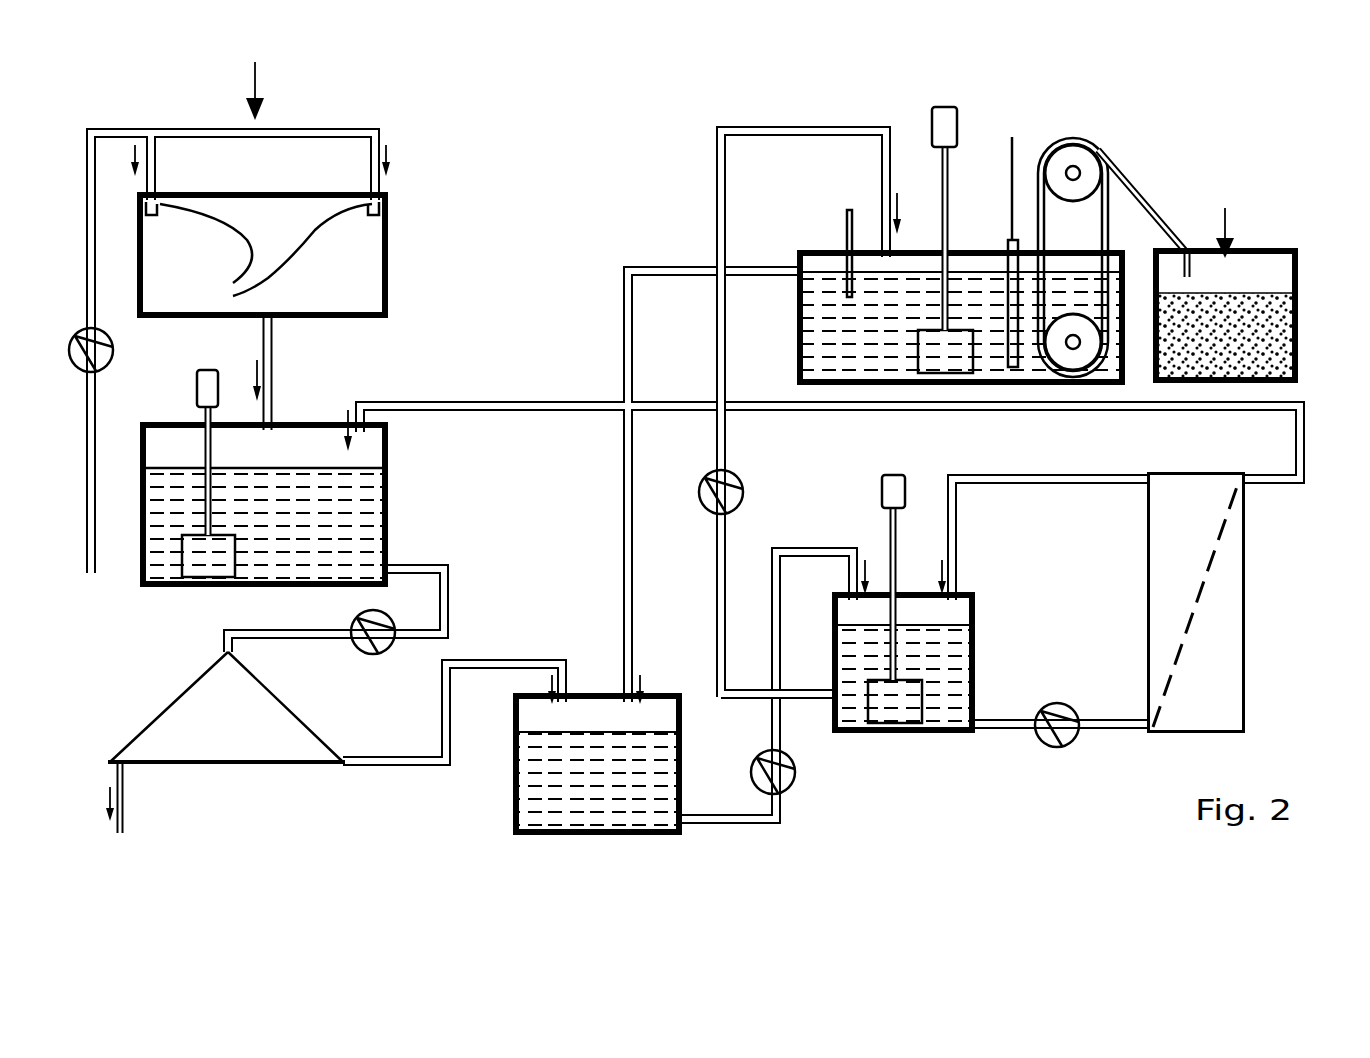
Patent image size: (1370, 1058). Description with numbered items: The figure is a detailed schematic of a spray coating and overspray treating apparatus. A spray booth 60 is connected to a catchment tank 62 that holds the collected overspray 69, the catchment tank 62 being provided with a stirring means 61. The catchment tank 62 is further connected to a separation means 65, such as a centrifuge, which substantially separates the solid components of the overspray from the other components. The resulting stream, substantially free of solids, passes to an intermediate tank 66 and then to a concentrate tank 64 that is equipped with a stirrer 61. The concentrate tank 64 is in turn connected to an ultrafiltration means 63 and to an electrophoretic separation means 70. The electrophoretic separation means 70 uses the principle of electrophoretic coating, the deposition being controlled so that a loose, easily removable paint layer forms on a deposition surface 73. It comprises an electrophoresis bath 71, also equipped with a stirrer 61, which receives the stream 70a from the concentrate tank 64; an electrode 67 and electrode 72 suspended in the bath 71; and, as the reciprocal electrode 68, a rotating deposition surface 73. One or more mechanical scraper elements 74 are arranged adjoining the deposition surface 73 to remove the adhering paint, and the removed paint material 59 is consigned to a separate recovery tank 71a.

The removed paint material 59 is at (1290, 352).
The spray booth 60 is at (287, 208).
The stirrer 61 is at (207, 372).
The catchment tank 62 is at (389, 508).
The ultrafiltration means 63 is at (1147, 582).
The concentrate tank 64 is at (977, 665).
The separation means 65 is at (188, 700).
The intermediate tank 66 is at (513, 800).
The electrode 67 is at (1008, 124).
The reciprocal electrode 68 is at (1068, 214).
The collected overspray 69 is at (272, 370).
The electrophoretic separation means 70 is at (1048, 256).
The stream from concentrate tank 70a is at (763, 128).
The electrophoresis bath 71 is at (797, 338).
The recovery tank 71a is at (1256, 314).
The electrode 72 is at (1006, 258).
The deposition surface 73 is at (1040, 190).
The mechanical scraper elements 74 is at (1143, 198).